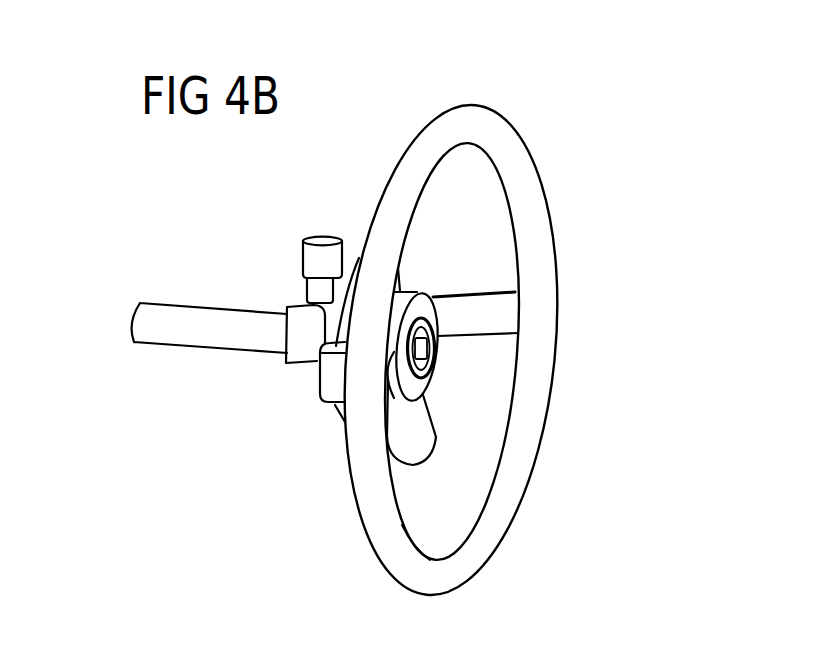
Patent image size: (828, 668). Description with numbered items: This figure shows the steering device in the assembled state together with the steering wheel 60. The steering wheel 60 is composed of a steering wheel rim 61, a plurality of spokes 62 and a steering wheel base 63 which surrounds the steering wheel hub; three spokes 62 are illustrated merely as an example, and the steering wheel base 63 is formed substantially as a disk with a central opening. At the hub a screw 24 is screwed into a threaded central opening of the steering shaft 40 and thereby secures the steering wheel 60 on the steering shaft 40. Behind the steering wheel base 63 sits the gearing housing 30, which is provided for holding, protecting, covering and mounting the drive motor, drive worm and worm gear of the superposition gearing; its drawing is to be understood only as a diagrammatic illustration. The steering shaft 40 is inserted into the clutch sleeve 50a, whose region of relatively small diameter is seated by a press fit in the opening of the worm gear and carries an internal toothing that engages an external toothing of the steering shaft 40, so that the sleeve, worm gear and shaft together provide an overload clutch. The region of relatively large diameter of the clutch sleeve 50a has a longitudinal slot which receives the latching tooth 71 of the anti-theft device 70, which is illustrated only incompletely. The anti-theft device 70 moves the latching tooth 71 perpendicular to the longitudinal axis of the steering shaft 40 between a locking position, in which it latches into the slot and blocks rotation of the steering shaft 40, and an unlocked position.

The steering wheel 60 is at (451, 308).
The steering wheel rim 61 is at (525, 158).
The spokes 62 is at (470, 310).
The steering wheel base 63 is at (401, 290).
The screw 24 is at (427, 351).
The gearing housing 30 is at (419, 385).
The steering shaft 40 is at (197, 348).
The clutch sleeve 50a is at (300, 368).
The anti-theft device 70 is at (307, 255).
The latching tooth 71 is at (316, 293).